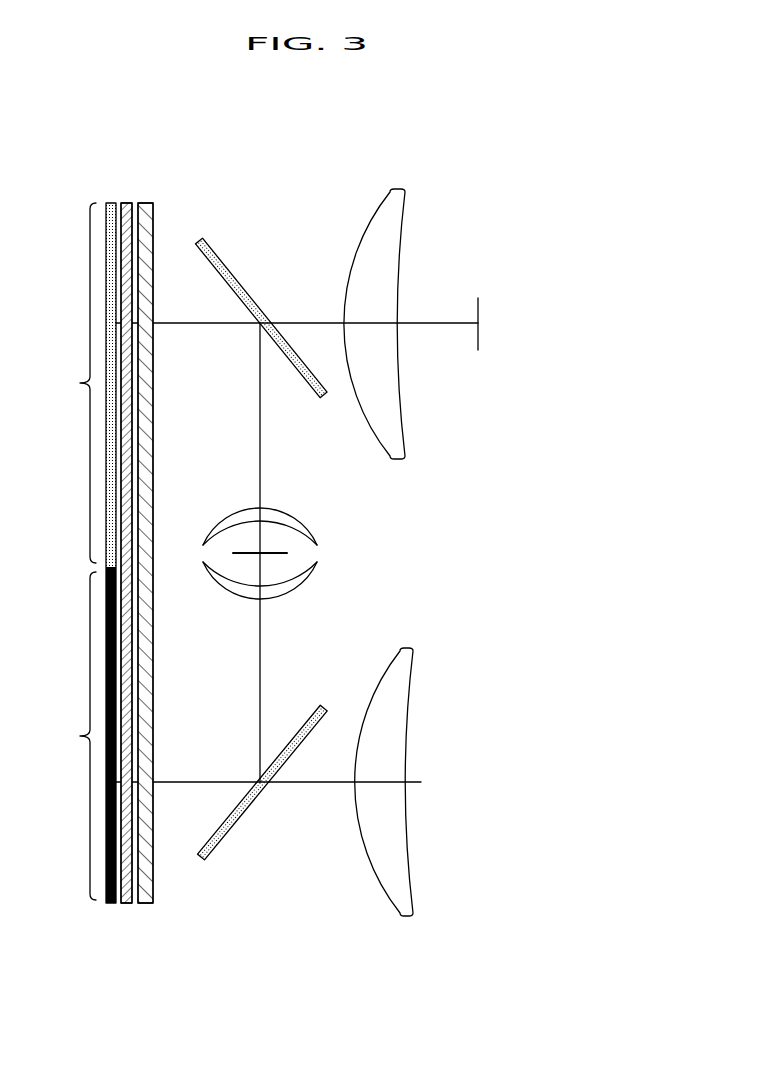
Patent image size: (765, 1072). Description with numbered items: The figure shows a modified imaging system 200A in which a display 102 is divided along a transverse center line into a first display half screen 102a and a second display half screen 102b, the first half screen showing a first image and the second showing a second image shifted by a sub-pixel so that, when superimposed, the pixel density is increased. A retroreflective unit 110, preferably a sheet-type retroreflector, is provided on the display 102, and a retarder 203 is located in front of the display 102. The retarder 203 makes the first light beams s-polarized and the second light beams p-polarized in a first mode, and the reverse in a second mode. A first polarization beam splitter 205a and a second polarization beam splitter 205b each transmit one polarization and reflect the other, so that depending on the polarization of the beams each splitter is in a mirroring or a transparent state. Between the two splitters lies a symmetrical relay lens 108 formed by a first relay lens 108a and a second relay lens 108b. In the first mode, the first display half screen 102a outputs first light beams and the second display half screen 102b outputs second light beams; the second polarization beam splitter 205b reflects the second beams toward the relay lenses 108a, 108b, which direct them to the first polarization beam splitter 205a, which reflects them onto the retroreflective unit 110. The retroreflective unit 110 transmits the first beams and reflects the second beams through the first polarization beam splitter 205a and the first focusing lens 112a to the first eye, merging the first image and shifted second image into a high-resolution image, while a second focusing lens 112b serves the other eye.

The imaging system 200A is at (556, 164).
The display 102 is at (108, 203).
The first display half screen 102a is at (70, 385).
The second display half screen 102b is at (70, 735).
The retroreflective unit 110 is at (130, 203).
The retarder 203 is at (153, 213).
The first polarization beam splitter 205a is at (231, 277).
The second polarization beam splitter 205b is at (222, 842).
The relay lens 108 is at (328, 553).
The first relay lens 108a is at (306, 527).
The second relay lens 108b is at (298, 588).
The first focusing lens 112a is at (412, 270).
The second focusing lens 112b is at (421, 693).